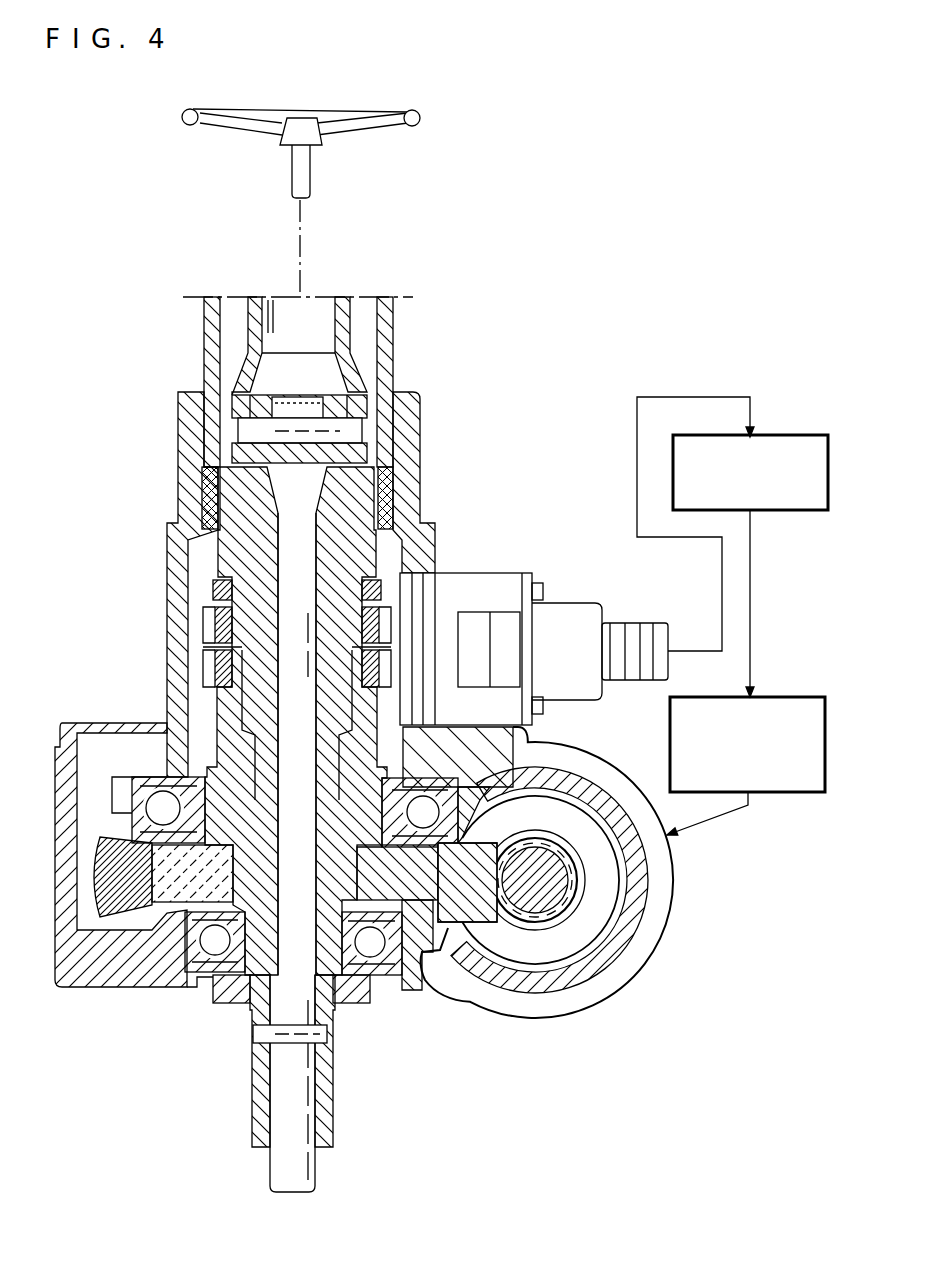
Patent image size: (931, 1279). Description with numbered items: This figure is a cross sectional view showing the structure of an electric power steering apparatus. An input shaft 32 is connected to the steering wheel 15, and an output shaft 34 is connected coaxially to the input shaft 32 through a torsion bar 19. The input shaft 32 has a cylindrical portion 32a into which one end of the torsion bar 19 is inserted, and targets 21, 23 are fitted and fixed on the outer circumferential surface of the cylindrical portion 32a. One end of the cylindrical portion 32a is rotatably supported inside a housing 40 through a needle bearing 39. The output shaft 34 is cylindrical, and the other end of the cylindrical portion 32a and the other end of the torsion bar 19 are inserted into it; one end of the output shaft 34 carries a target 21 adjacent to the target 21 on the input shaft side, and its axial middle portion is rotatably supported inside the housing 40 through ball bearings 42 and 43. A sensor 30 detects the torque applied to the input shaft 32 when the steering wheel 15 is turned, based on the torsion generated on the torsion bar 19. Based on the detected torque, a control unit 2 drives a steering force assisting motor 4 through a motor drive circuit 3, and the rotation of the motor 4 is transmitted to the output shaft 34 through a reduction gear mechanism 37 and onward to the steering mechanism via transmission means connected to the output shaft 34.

The control unit 2 is at (785, 513).
The motor drive circuit 3 is at (785, 795).
The steering force assisting motor 4 is at (668, 907).
The steering wheel 15 is at (420, 117).
The torsion bar 19 is at (262, 577).
The target 21 is at (205, 610).
The target 23 is at (208, 627).
The sensor 30 is at (487, 572).
The input shaft 32 is at (237, 400).
The cylindrical portion 32a is at (203, 593).
The output shaft 34 is at (255, 1010).
The reduction gear mechanism 37 is at (502, 927).
The needle bearing 39 is at (203, 490).
The housing 40 is at (408, 445).
The ball bearing 42 is at (140, 767).
The ball bearing 43 is at (195, 970).